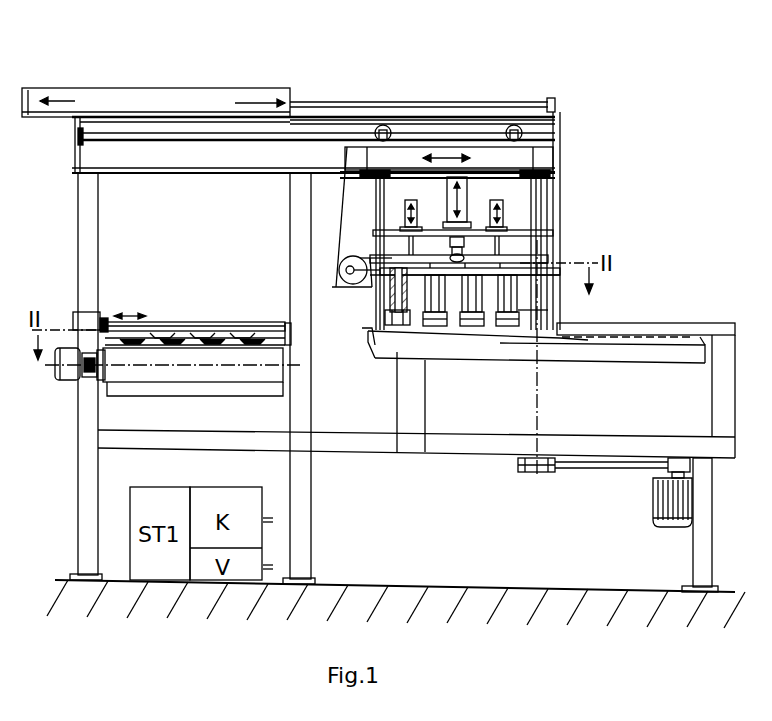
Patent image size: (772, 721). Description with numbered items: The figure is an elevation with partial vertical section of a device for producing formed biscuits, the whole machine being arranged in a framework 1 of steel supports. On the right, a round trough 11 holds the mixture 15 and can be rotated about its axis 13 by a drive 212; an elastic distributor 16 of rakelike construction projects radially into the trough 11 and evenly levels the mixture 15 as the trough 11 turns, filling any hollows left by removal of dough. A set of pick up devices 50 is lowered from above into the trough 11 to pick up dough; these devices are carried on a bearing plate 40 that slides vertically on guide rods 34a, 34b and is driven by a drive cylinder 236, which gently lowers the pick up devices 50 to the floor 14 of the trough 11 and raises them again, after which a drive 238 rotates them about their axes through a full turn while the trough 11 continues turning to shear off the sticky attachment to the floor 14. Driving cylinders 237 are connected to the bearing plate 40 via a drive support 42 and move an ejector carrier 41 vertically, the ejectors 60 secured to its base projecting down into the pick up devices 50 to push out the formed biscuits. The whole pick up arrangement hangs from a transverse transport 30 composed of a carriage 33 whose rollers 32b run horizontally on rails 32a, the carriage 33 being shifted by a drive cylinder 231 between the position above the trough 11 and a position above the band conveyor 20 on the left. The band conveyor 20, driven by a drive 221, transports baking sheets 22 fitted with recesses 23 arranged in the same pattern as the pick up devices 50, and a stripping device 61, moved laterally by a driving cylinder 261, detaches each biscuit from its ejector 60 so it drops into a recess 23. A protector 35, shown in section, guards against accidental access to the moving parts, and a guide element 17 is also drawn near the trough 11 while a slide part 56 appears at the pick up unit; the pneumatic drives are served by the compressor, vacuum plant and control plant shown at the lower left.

The framework 1 is at (86, 513).
The trough 11 is at (370, 347).
The axis 13 is at (536, 476).
The floor 14 is at (425, 462).
The mixture 15 is at (397, 452).
The elastic distributor 16 is at (693, 336).
The guide strip 17 is at (376, 332).
The band conveyor 20 is at (135, 384).
The baking sheet 22 is at (163, 346).
The recesses 23 is at (225, 332).
The transverse transport 30 is at (322, 112).
The rails 32a is at (511, 125).
The rollers 32b is at (386, 125).
The carriage 33 is at (450, 165).
The guide rod 34a is at (378, 197).
The guide rod 34b is at (536, 198).
The protector 35 is at (553, 190).
The bearing plate 40 is at (523, 284).
The ejector carrier 41 is at (550, 262).
The drive support 42 is at (553, 234).
The pick up devices 50 is at (548, 310).
The slide 56 is at (392, 318).
The ejector 60 is at (383, 262).
The stripping device 61 is at (165, 324).
The drive 212 is at (658, 515).
The drive 221 is at (67, 381).
The drive cylinder 231 is at (172, 102).
The drive cylinder 236 is at (461, 190).
The driving cylinders 237 is at (407, 208).
The drive 238 is at (340, 267).
The driving cylinder 261 is at (78, 312).